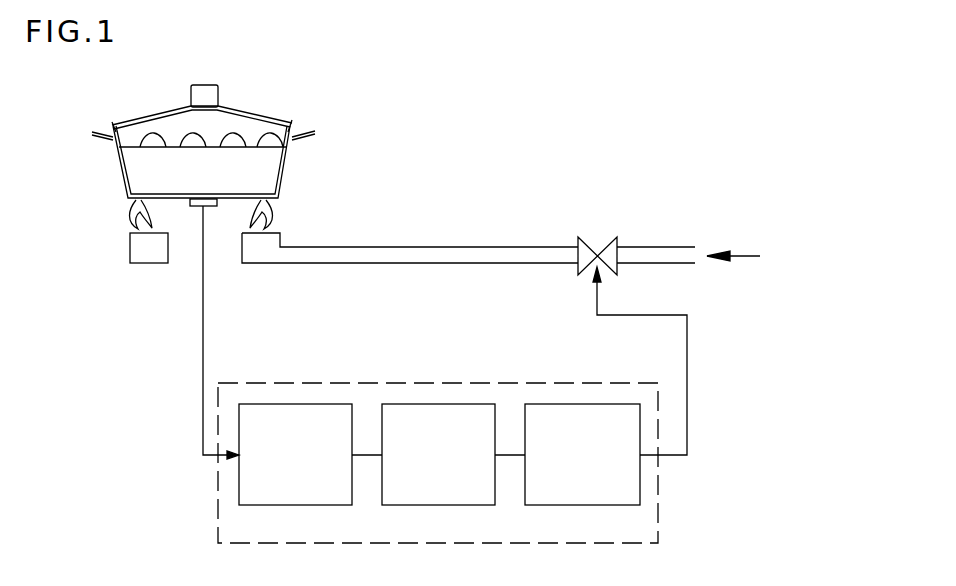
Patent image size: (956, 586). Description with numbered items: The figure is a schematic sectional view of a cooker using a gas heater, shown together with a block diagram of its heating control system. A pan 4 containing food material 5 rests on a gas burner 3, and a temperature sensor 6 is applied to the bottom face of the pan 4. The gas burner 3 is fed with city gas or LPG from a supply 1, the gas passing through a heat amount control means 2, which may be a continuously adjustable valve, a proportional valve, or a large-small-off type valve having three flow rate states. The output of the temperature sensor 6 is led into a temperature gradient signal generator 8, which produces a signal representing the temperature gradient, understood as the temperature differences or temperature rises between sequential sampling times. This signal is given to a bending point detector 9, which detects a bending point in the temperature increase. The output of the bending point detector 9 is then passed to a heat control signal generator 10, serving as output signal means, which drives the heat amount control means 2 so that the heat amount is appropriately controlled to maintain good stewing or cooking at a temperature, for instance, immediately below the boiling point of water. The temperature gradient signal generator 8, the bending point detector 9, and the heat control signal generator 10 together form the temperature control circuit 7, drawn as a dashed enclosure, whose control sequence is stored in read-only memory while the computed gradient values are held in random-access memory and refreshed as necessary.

The supply 1 is at (717, 242).
The heat amount control means 2 is at (614, 233).
The gas burner 3 is at (148, 255).
The pan 4 is at (283, 177).
The food material 5 is at (137, 178).
The temperature sensor 6 is at (190, 207).
The temperature control circuit 7 is at (313, 543).
The temperature gradient signal generator 8 is at (268, 505).
The bending point detector 9 is at (402, 505).
The heat control signal generator 10 is at (545, 505).